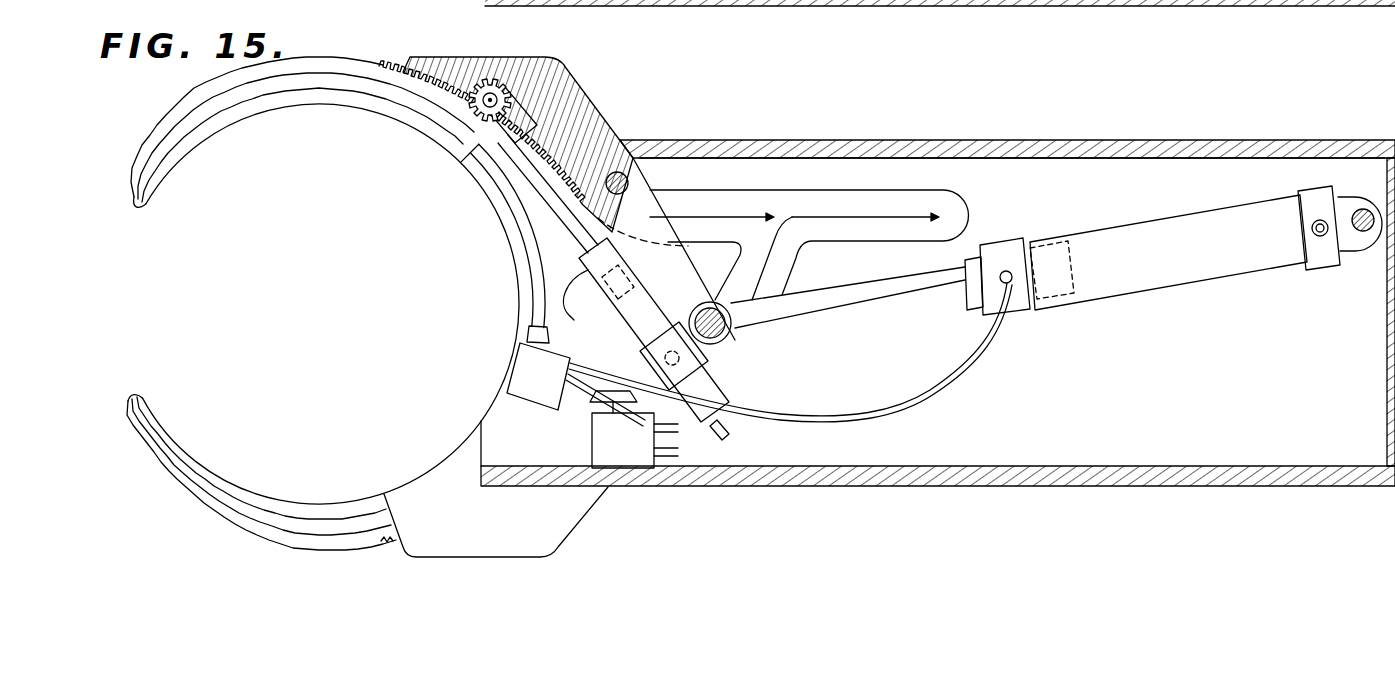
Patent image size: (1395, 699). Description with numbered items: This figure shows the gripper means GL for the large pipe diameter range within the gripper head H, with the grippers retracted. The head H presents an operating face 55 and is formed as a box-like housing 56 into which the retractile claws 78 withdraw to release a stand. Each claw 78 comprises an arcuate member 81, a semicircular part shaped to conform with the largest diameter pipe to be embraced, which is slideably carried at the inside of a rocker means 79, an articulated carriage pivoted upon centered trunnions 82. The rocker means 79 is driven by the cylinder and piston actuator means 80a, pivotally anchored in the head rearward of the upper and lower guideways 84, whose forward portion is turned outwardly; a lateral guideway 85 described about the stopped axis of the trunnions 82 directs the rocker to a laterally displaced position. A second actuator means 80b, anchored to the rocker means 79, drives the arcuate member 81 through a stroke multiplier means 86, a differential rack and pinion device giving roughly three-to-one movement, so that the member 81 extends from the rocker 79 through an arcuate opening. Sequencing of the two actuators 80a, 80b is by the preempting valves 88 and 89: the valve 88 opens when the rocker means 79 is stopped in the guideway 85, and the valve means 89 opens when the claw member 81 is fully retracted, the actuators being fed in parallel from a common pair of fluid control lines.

The gripper head H is at (1010, 133).
The gripper means for large diameter range GL is at (178, 97).
The operating face 55 is at (503, 240).
The box-like housing 56 is at (834, 141).
The retractile claws 78 is at (351, 58).
The rocker means 79 is at (578, 91).
The actuator means 80a is at (1174, 284).
The actuator means 80b is at (724, 386).
The arcuate member 81 is at (310, 99).
The trunnions 82 is at (640, 181).
The guideways 84 is at (805, 194).
The lateral guideway 85 is at (790, 275).
The stroke multiplier means 86 is at (500, 138).
The preempting valve 88 is at (634, 429).
The preempting valve means 89 is at (759, 354).